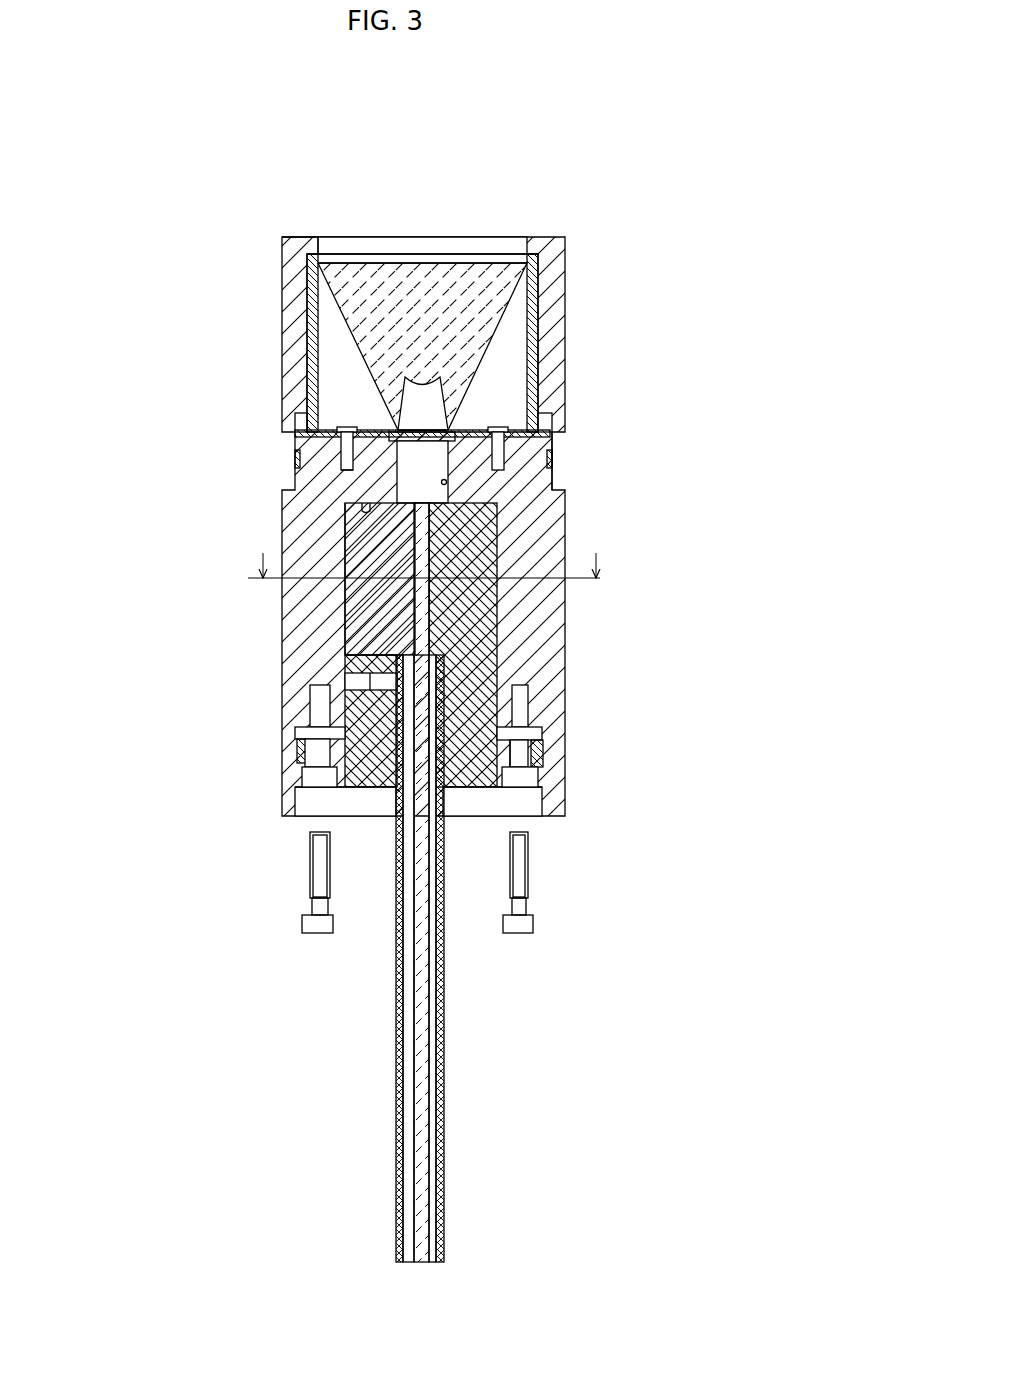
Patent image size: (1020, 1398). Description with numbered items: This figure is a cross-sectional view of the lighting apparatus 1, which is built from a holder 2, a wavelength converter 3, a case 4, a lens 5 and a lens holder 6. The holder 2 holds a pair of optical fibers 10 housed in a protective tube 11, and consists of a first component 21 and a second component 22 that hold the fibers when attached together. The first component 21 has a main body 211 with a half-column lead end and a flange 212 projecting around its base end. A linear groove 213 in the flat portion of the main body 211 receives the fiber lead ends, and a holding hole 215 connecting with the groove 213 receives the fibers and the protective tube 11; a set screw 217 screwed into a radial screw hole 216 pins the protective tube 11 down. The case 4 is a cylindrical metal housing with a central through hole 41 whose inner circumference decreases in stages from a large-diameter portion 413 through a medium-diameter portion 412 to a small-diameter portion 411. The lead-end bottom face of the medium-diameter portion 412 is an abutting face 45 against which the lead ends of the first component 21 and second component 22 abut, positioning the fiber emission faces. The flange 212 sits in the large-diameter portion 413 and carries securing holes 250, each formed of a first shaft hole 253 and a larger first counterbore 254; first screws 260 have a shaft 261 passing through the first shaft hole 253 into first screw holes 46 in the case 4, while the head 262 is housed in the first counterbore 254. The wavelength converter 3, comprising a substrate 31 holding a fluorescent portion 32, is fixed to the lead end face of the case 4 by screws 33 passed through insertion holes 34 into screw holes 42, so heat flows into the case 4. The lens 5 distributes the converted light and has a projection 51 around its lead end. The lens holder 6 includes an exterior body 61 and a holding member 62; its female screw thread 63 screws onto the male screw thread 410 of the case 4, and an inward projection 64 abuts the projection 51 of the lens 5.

The lighting apparatus 1 is at (232, 160).
The holder 2 is at (343, 526).
The first component 21 is at (340, 653).
The second component 22 is at (340, 621).
The wavelength converter 3 is at (362, 393).
The substrate 31 is at (347, 431).
The fluorescent portion 32 is at (405, 428).
The screws 33 is at (345, 455).
The insertion holes 34 is at (345, 438).
The case 4 is at (270, 793).
The through hole 41 is at (556, 645).
The male screw thread 410 is at (557, 466).
The small-diameter portion 411 is at (446, 486).
The medium-diameter portion 412 is at (492, 620).
The large-diameter portion 413 is at (543, 727).
The screw holes 42 is at (400, 480).
The abutting face 45 is at (364, 509).
The first screw holes 46 is at (312, 707).
The lens 5 is at (390, 265).
The projection 51 is at (311, 262).
The lens holder 6 is at (321, 343).
The exterior body 61 is at (372, 432).
The holding member 62 is at (312, 286).
The female screw thread 63 is at (551, 458).
The projection 64 is at (303, 240).
The optical fibers 10 is at (420, 1080).
The protective tube 11 is at (438, 1150).
The main body 211 is at (386, 685).
The flange 212 is at (520, 757).
The groove 213 is at (415, 542).
The holding hole 215 is at (500, 781).
The screw hole 216 is at (372, 681).
The set screw 217 is at (345, 657).
The securing holes 250 is at (377, 745).
The first shaft hole 253 is at (300, 731).
The first counterbore 254 is at (313, 750).
The first screws 260 is at (371, 882).
The shaft 261 is at (310, 877).
The head 262 is at (312, 922).